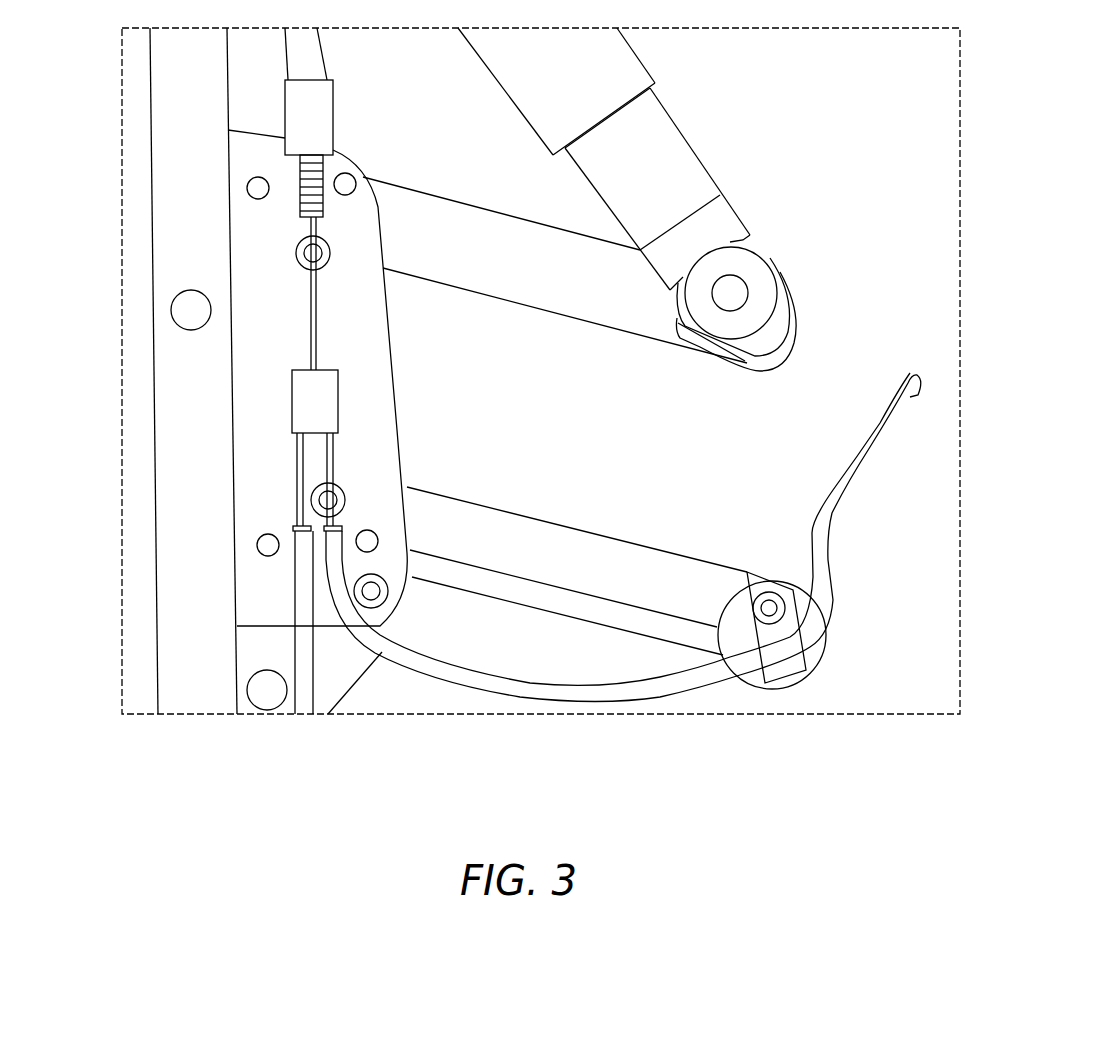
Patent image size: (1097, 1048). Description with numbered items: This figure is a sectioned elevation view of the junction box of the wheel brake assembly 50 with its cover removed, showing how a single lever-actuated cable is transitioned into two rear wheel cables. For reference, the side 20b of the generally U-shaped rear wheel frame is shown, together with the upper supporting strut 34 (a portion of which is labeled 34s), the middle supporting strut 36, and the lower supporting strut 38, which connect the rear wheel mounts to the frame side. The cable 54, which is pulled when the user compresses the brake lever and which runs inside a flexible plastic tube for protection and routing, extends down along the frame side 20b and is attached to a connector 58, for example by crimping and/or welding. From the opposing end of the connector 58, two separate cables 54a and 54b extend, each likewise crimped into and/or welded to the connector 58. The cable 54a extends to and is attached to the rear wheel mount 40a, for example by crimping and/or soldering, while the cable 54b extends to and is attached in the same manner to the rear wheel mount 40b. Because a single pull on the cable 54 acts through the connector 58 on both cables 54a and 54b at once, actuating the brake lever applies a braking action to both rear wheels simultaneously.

The side of rear wheel frame 20b is at (193, 248).
The wheel brake assembly 50 is at (112, 422).
The upper supporting strut 34 is at (677, 165).
The gas spring cylinder body 34s is at (528, 100).
The middle supporting strut 36 is at (557, 290).
The lower supporting strut 38 is at (620, 560).
The rear wheel mount 40a is at (308, 714).
The rear wheel mount 40b is at (930, 455).
The cable 54 is at (317, 318).
The cable 54a is at (300, 480).
The cable 54b is at (333, 458).
The connector 58 is at (328, 408).